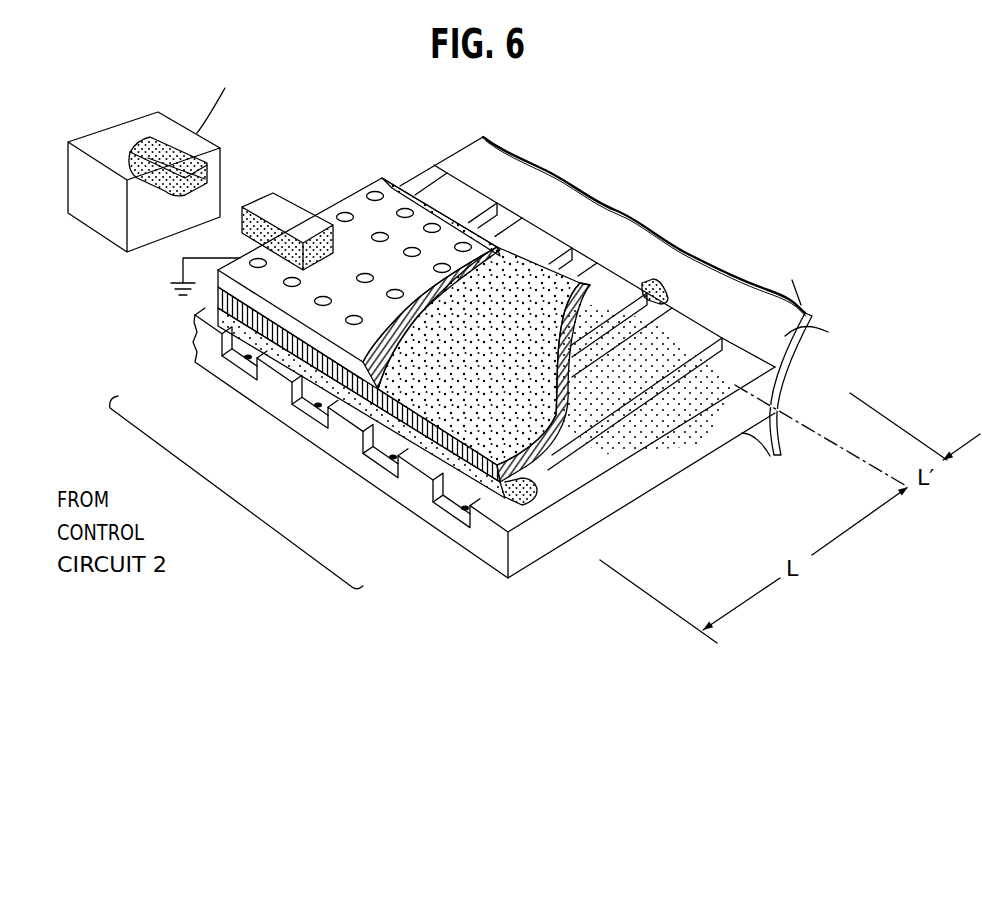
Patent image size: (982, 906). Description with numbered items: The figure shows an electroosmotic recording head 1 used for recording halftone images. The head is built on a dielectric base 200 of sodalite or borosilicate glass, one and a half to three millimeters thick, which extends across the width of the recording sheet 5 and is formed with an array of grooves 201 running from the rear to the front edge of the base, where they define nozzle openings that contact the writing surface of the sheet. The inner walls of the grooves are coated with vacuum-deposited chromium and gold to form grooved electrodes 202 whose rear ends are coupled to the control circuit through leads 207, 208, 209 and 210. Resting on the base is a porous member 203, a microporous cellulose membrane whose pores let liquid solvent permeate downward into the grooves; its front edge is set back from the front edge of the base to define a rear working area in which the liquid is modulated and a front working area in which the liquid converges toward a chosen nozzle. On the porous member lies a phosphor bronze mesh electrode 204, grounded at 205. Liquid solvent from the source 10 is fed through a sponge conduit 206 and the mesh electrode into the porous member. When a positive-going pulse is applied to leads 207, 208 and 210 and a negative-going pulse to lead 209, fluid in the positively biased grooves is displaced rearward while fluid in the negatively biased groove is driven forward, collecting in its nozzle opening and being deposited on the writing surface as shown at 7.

The recording head 1 is at (412, 145).
The recording sheet 5 is at (483, 136).
The deposited solvent 7 is at (667, 290).
The source 10 is at (134, 119).
The dielectric base 200 is at (628, 495).
The grooves 201 is at (585, 263).
The grooved electrodes 202 is at (463, 522).
The porous member 203 is at (542, 263).
The mesh electrode 204 is at (326, 212).
The ground connection 205 is at (228, 262).
The sponge conduit 206 is at (273, 193).
The lead 207 is at (248, 357).
The lead 208 is at (318, 405).
The lead 209 is at (393, 457).
The lead 210 is at (465, 508).